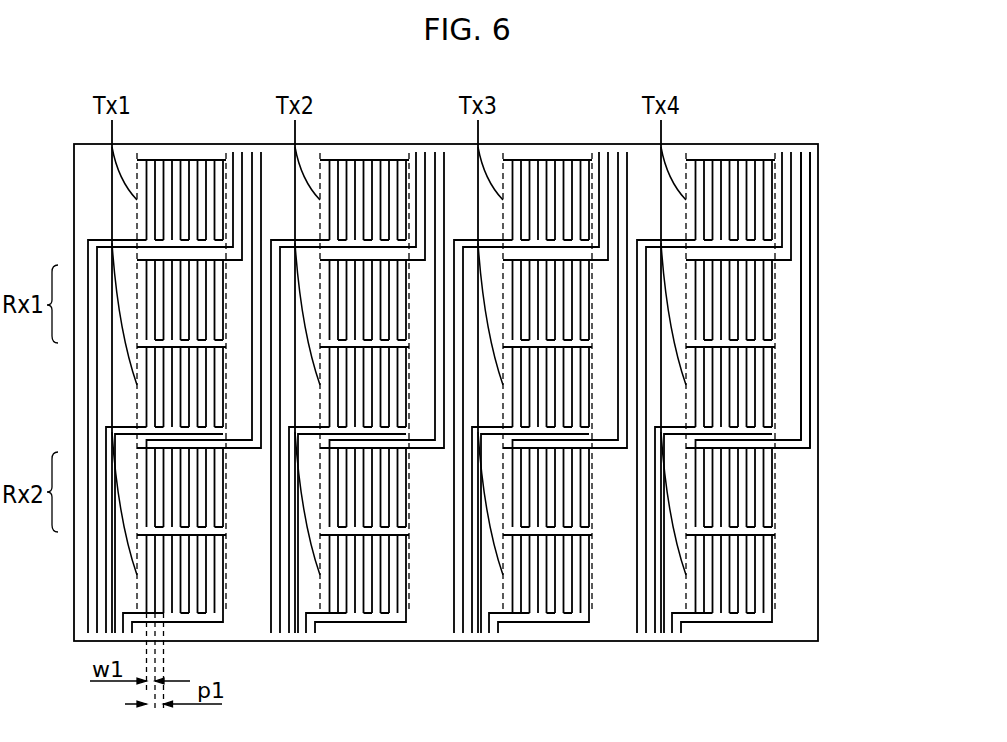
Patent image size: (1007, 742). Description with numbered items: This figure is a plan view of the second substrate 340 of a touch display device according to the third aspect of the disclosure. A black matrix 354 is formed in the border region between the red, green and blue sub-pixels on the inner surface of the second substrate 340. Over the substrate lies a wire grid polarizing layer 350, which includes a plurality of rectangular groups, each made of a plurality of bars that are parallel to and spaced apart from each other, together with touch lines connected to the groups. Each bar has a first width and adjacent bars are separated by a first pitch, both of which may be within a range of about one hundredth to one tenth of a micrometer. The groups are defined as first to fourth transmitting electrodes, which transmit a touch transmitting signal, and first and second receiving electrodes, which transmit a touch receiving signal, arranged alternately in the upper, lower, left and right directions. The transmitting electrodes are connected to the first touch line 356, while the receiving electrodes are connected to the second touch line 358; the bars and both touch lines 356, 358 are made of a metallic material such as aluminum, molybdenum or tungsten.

The second substrate 340 is at (818, 185).
The wire grid polarizing layer 350 is at (755, 158).
The black matrix 354 is at (811, 335).
The first touch line 356 is at (88, 378).
The second touch line 358 is at (803, 388).